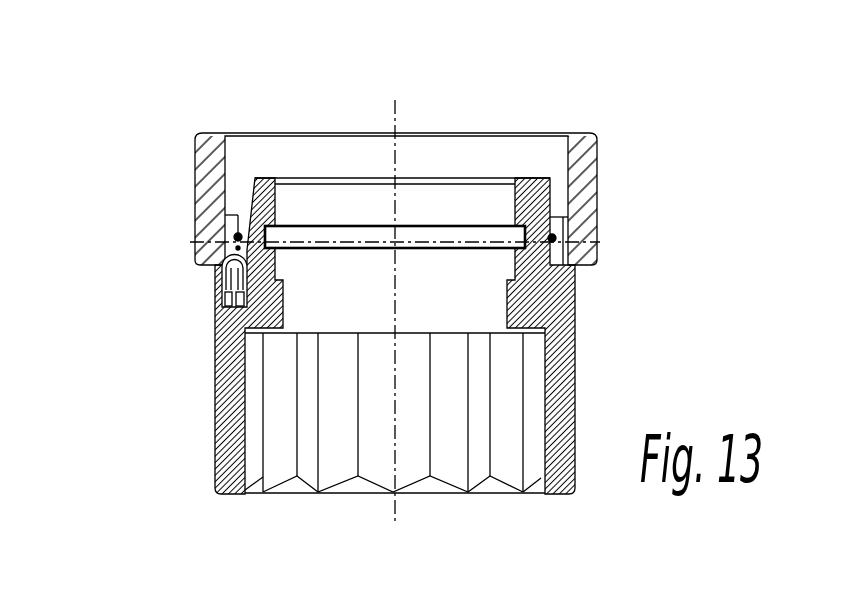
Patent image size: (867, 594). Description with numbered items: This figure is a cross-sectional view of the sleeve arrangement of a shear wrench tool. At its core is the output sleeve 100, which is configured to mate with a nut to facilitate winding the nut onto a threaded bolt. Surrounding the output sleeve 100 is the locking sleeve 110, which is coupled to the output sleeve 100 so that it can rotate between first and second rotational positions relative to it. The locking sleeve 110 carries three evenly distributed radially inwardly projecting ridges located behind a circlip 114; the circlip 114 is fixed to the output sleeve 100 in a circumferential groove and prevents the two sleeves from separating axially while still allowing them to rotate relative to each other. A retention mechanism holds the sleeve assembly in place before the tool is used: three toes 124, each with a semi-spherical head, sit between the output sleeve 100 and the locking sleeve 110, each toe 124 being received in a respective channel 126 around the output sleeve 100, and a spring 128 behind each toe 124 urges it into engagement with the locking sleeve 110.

The output sleeve 100 is at (576, 370).
The locking sleeve 110 is at (595, 181).
The circlip 114 is at (238, 233).
The toe 124 is at (225, 253).
The channel 126 is at (215, 308).
The spring 128 is at (215, 297).